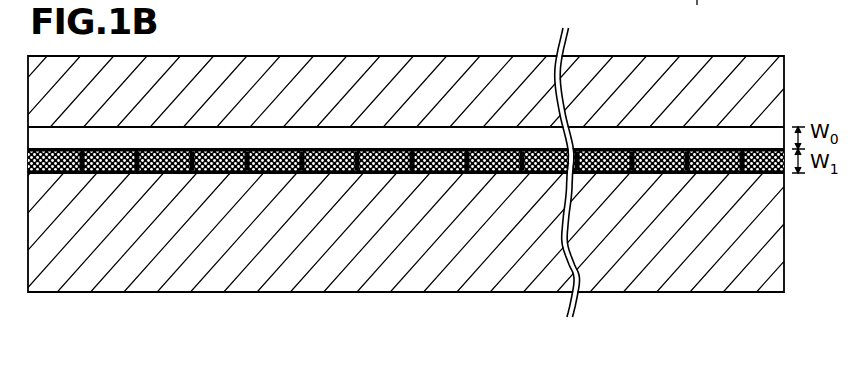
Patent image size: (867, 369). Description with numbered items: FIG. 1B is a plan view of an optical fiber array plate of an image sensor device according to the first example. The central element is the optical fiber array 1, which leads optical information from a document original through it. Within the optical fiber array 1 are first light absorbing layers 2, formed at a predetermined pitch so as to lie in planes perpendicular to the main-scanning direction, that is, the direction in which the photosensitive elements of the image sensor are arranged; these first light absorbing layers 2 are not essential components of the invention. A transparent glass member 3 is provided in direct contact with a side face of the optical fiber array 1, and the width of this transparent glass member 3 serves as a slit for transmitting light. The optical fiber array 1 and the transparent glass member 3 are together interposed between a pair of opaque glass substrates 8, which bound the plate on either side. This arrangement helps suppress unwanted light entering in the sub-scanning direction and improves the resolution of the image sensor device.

The optical fiber array 1 is at (215, 173).
The first light absorbing layers 2 is at (298, 173).
The transparent glass member 3 is at (251, 138).
The opaque glass substrates 8 is at (407, 252).